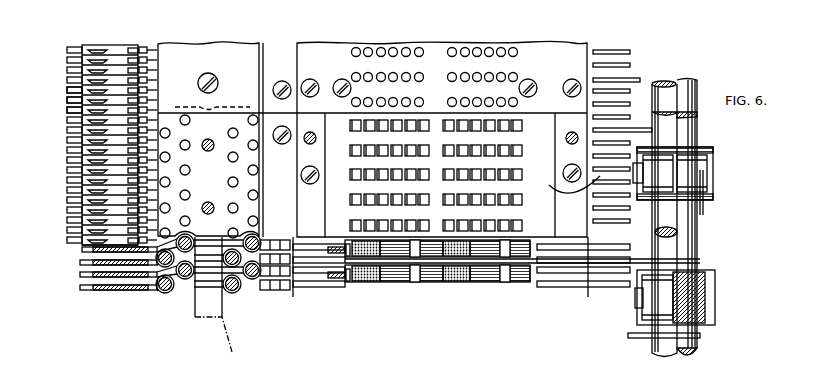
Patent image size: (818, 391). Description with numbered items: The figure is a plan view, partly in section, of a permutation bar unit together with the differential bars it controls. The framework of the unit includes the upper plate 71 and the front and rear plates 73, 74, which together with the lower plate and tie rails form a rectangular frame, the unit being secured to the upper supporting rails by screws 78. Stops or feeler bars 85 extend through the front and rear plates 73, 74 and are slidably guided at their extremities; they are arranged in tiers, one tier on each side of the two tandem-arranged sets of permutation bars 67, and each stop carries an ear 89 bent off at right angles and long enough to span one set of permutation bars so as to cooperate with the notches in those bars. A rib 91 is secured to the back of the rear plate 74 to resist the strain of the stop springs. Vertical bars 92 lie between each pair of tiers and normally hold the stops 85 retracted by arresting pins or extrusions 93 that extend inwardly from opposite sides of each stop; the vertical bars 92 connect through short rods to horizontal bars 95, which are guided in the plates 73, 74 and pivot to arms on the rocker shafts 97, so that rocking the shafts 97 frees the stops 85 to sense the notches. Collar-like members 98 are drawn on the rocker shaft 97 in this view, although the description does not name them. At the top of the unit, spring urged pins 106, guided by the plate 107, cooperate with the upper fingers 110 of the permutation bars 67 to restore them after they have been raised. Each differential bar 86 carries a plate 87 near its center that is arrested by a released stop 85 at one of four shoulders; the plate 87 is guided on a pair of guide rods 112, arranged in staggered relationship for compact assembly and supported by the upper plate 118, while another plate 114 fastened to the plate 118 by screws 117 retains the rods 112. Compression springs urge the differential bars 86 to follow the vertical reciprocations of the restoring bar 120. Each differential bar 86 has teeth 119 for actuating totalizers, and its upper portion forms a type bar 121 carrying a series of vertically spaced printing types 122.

The permutation bars 67 is at (465, 283).
The upper plate 71 is at (550, 124).
The front plate 73 is at (293, 290).
The rear plate 74 is at (588, 290).
The screws 78 is at (319, 172).
The stops or feeler bars 85 is at (607, 64).
The differential bar 86 is at (124, 278).
The plate 87 is at (185, 279).
The ear 89 is at (414, 257).
The rib 91 is at (567, 183).
The vertical bars 92 is at (335, 279).
The pins or extrusions 93 is at (349, 281).
The horizontal bars 95 is at (640, 78).
The rocker shafts 97 is at (673, 250).
The bearing collar 98 is at (715, 181).
The spring urged pins 106 is at (464, 47).
The plate 107 is at (537, 62).
The upper fingers 110 is at (517, 152).
The guide rods 112 is at (185, 116).
The plate 114 is at (190, 50).
The screws 117 is at (212, 73).
The upper plate 118 is at (266, 125).
The teeth 119 is at (80, 287).
The restoring bar 120 is at (223, 303).
The type bar 121 is at (118, 60).
The printing types 122 is at (67, 107).